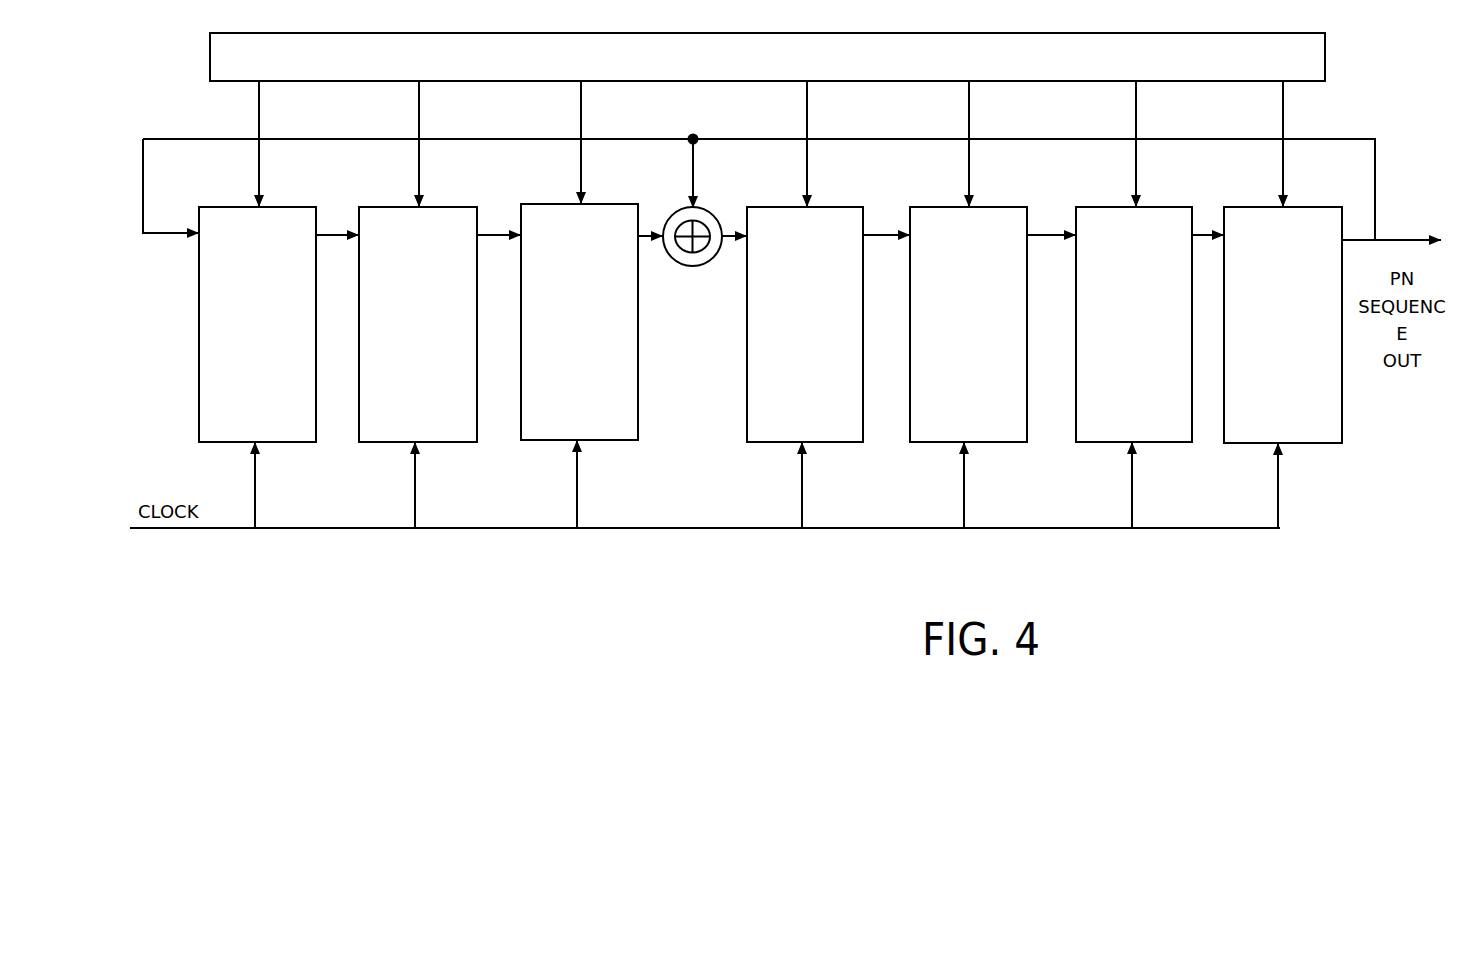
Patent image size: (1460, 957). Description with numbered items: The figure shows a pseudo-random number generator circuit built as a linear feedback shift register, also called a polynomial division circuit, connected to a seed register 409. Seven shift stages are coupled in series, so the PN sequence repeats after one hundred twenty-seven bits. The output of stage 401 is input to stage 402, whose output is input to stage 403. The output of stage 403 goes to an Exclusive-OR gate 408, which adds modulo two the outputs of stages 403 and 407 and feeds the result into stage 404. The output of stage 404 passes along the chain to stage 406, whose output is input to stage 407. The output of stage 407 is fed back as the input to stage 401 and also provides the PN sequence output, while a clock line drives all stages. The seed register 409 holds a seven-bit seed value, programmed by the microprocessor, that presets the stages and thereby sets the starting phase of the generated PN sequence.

The shift stage 401 is at (245, 427).
The shift stage 402 is at (400, 427).
The shift stage 403 is at (548, 424).
The shift stage 404 is at (790, 427).
The shift stage 406 is at (951, 427).
The shift stage 407 is at (1258, 427).
The Exclusive-OR gate 408 is at (694, 266).
The seed register 409 is at (1325, 53).